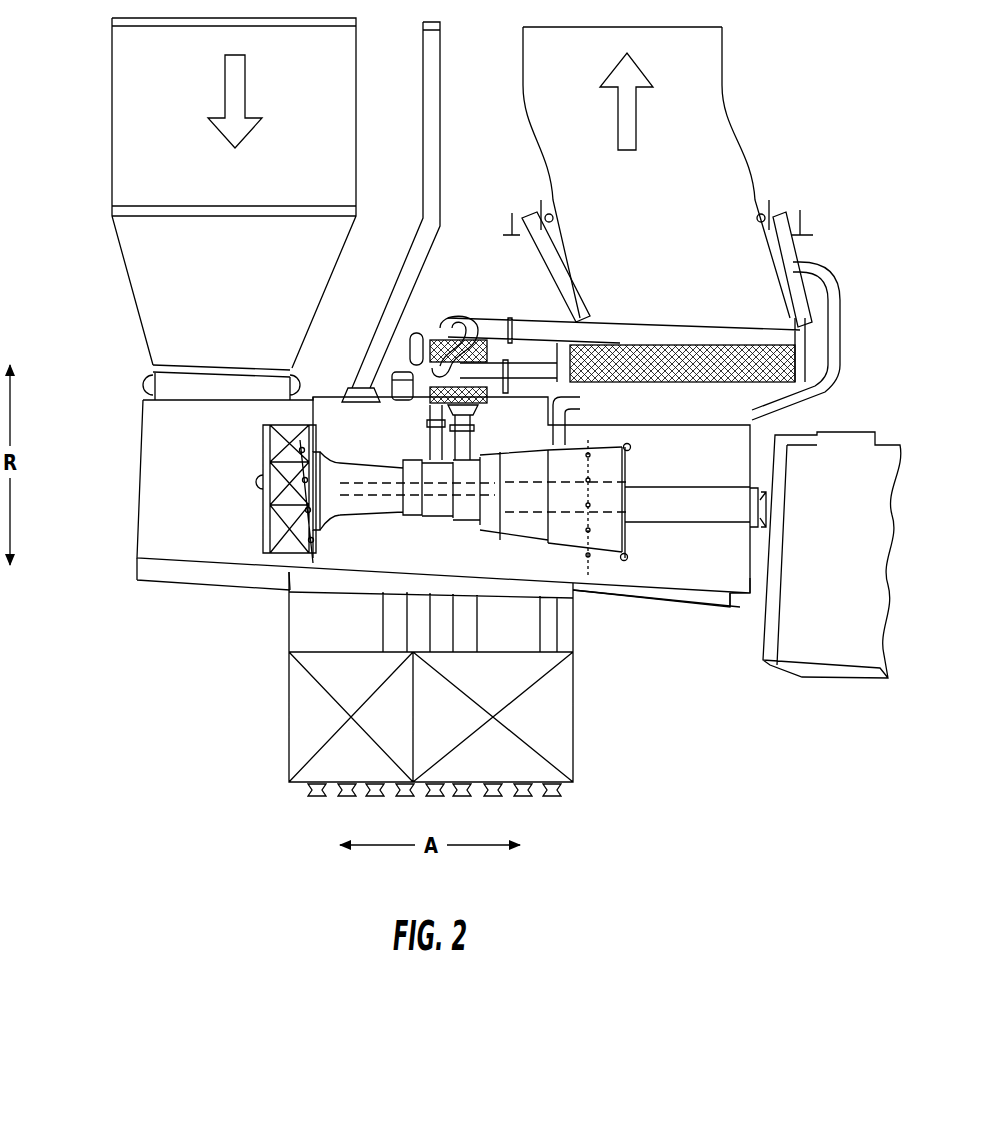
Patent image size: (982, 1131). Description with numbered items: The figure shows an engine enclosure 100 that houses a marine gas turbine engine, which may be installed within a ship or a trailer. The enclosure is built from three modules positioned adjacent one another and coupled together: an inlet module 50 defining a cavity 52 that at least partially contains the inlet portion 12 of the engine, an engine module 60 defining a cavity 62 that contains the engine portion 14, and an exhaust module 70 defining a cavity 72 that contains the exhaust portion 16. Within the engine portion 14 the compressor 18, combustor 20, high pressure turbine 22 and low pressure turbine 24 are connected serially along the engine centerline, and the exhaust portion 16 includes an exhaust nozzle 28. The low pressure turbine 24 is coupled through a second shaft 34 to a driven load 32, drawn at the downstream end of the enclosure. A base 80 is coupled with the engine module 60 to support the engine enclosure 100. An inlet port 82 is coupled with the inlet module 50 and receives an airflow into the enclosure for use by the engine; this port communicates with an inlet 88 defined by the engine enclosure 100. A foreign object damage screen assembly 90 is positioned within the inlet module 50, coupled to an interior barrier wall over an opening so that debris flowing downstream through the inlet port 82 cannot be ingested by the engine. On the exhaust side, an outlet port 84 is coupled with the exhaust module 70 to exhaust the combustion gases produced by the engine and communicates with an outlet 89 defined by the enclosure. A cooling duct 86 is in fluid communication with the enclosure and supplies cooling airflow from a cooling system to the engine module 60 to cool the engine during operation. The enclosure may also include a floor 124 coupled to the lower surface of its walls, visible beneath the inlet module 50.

The inlet portion 12 is at (506, 477).
The engine portion 14 is at (416, 457).
The exhaust portion 16 is at (567, 560).
The compressor 18 is at (356, 516).
The combustor 20 is at (447, 535).
The high pressure turbine 22 is at (462, 518).
The low pressure turbine 24 is at (515, 447).
The exhaust nozzle 28 is at (568, 474).
The driven load 32 is at (847, 425).
The second shaft 34 is at (717, 523).
The inlet module 50 is at (398, 554).
The cavity 52 is at (184, 524).
The engine module 60 is at (326, 388).
The cavity 62 is at (396, 676).
The exhaust module 70 is at (700, 620).
The cavity 72 is at (660, 560).
The base 80 is at (420, 585).
The inlet port 82 is at (112, 83).
The outlet port 84 is at (755, 157).
The cooling duct 86 is at (440, 203).
The inlet 88 is at (202, 393).
The outlet 89 is at (735, 457).
The foreign object damage (FOD) screen assembly 90 is at (255, 441).
The engine enclosure 100 is at (437, 556).
The floor 124 is at (178, 565).